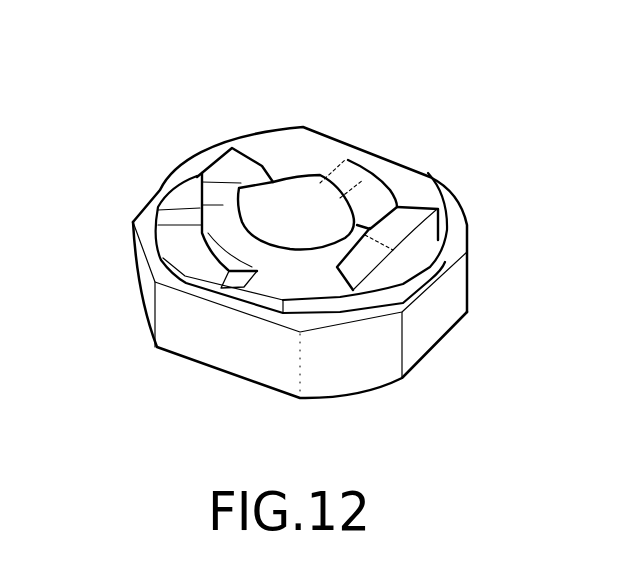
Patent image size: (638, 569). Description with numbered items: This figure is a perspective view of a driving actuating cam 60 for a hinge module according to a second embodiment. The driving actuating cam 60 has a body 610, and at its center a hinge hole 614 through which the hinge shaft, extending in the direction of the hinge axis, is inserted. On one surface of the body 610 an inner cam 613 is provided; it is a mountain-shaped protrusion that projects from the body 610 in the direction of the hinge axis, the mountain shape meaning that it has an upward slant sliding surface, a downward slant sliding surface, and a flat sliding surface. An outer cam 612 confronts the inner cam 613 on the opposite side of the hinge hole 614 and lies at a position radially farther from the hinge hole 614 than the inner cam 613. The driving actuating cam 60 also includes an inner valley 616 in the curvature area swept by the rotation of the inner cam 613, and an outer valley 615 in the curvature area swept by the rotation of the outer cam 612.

The driving actuating cam 60 is at (486, 212).
The body 610 is at (428, 320).
The outer cam 612 is at (413, 218).
The inner cam 613 is at (227, 167).
The hinge hole 614 is at (307, 203).
The outer valley 615 is at (193, 261).
The inner valley 616 is at (373, 200).